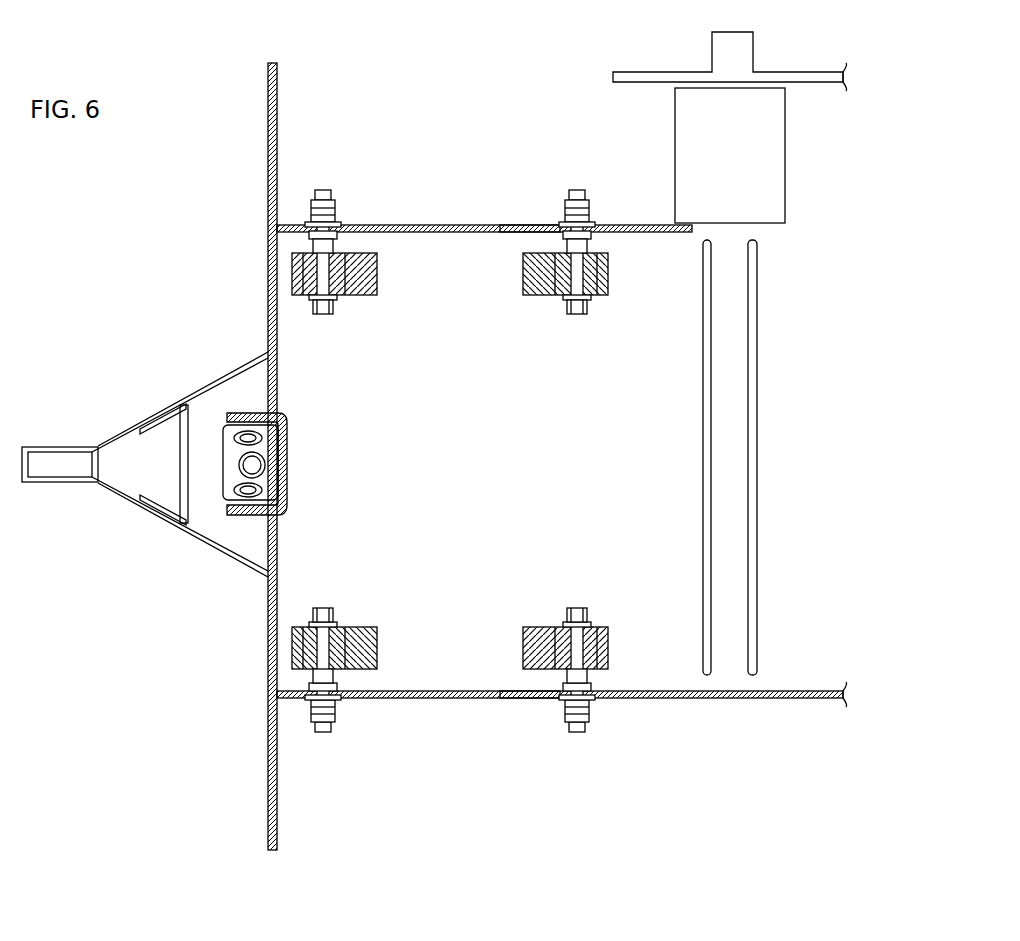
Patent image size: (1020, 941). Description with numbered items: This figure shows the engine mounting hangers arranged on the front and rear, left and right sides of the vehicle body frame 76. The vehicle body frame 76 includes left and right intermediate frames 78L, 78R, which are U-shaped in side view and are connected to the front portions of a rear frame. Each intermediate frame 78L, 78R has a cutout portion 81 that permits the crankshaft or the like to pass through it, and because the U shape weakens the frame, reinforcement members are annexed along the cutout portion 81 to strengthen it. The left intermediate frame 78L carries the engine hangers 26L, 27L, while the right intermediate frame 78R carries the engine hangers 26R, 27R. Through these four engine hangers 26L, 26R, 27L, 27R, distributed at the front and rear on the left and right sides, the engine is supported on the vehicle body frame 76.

The vehicle body frame 76 is at (402, 203).
The right intermediate frame 78R is at (618, 225).
The left intermediate frame 78L is at (635, 698).
The cutout portion 81 is at (527, 226).
The engine hanger 26R is at (338, 303).
The engine hanger 27R is at (560, 300).
The engine hanger 26L is at (342, 630).
The engine hanger 27L is at (562, 630).